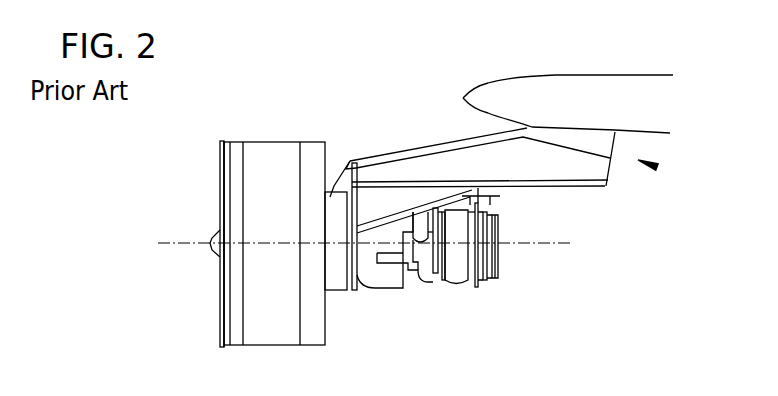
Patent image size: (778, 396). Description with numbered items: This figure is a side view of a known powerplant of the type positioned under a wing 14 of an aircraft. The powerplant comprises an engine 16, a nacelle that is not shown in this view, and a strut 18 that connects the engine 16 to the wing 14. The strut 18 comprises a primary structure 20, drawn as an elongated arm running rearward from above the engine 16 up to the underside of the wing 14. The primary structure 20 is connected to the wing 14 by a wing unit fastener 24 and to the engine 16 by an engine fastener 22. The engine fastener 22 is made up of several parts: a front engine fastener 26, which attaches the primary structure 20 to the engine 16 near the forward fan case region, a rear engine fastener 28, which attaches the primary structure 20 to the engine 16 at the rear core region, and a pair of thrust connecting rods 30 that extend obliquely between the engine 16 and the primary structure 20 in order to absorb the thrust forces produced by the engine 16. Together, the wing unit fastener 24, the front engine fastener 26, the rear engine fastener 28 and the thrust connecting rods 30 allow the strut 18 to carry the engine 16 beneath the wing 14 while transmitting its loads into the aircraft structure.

The wing 14 is at (549, 67).
The engine 16 is at (194, 286).
The strut 18 is at (346, 109).
The primary structure 20 is at (452, 149).
The engine fastener 22 is at (510, 211).
The wing unit fastener 24 is at (657, 167).
The front engine fastener 26 is at (312, 181).
The rear engine fastener 28 is at (512, 199).
The thrust connecting rods 30 is at (414, 183).